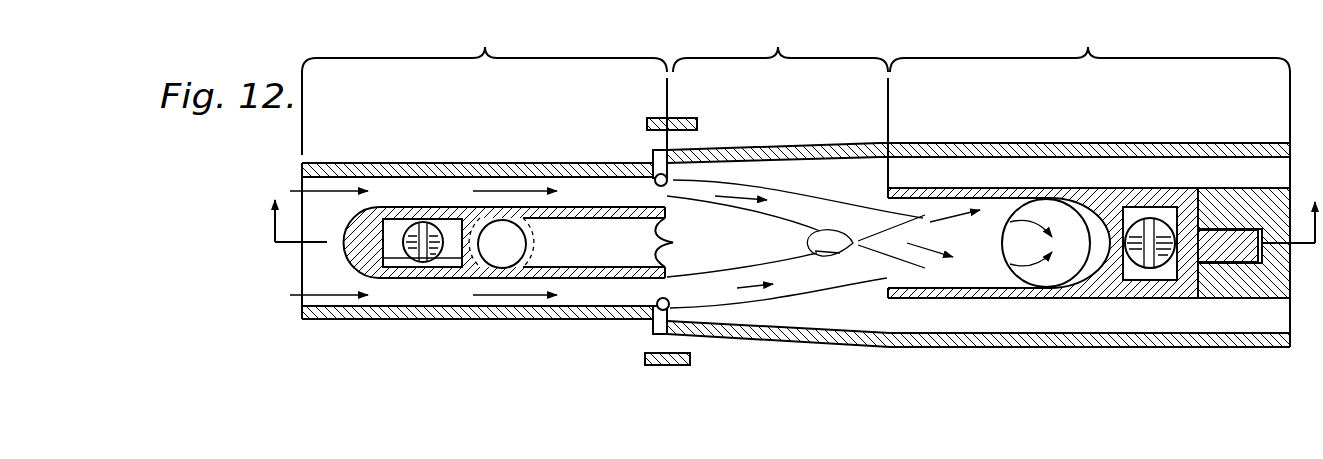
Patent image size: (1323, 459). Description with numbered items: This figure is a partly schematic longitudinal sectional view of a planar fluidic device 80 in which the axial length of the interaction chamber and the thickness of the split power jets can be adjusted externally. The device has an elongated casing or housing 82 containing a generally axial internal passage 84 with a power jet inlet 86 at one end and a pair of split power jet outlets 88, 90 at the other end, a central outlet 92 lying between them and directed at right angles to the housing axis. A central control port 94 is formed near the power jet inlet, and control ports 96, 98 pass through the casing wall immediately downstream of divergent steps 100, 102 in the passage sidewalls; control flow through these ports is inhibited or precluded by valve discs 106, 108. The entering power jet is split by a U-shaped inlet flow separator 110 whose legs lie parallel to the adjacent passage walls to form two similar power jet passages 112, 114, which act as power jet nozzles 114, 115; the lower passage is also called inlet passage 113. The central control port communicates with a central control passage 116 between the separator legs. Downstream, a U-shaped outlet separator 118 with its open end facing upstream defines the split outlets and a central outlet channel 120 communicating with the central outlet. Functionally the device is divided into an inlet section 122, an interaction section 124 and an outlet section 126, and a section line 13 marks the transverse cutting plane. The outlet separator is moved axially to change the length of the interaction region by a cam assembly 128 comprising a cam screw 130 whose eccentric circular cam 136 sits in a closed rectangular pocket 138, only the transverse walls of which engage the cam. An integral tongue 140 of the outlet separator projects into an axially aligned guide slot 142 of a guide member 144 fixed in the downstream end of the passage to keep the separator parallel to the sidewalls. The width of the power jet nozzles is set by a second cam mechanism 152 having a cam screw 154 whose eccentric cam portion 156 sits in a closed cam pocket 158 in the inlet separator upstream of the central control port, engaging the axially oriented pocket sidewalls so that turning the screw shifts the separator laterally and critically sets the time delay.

The section line 13- 13 is at (790, 248).
The fluidic device 80 is at (780, 134).
The casing 82 is at (895, 139).
The internal passage 84 is at (917, 326).
The power jet inlet 86 is at (302, 181).
The split power jet outlet 88 is at (1247, 167).
The split power jet outlet 90 is at (1245, 320).
The central outlet 92 is at (1002, 240).
The central control port 94 is at (521, 250).
The control port 96 is at (672, 150).
The control port 98 is at (675, 335).
The divergent step 100 is at (652, 168).
The divergent step 102 is at (652, 318).
The valve disc 106 is at (675, 118).
The valve disc 108 is at (677, 366).
The inlet flow separator 110 is at (673, 243).
The power jet passage 112 is at (462, 185).
The inlet passage 113 is at (470, 292).
The power jet passage 114 is at (676, 198).
The power jet nozzle 115 is at (673, 288).
The central control passage 116 is at (610, 255).
The outlet separator 118 is at (918, 188).
The central outlet channel 120 is at (897, 209).
The inlet section 122 is at (484, 84).
The interaction section 124 is at (777, 103).
The outlet section 126 is at (1090, 79).
The cam assembly 128 is at (1147, 204).
The cam screw 130 is at (1128, 207).
The cam 136 is at (1165, 228).
The pocket 138 is at (1133, 275).
The tongue 140 is at (1226, 252).
The guide slot 142 is at (1253, 252).
The guide member 144 is at (1272, 197).
The second cam mechanism 152 is at (397, 262).
The cam screw 154 is at (444, 258).
The cam portion 156 is at (404, 232).
The cam pocket 158 is at (451, 262).